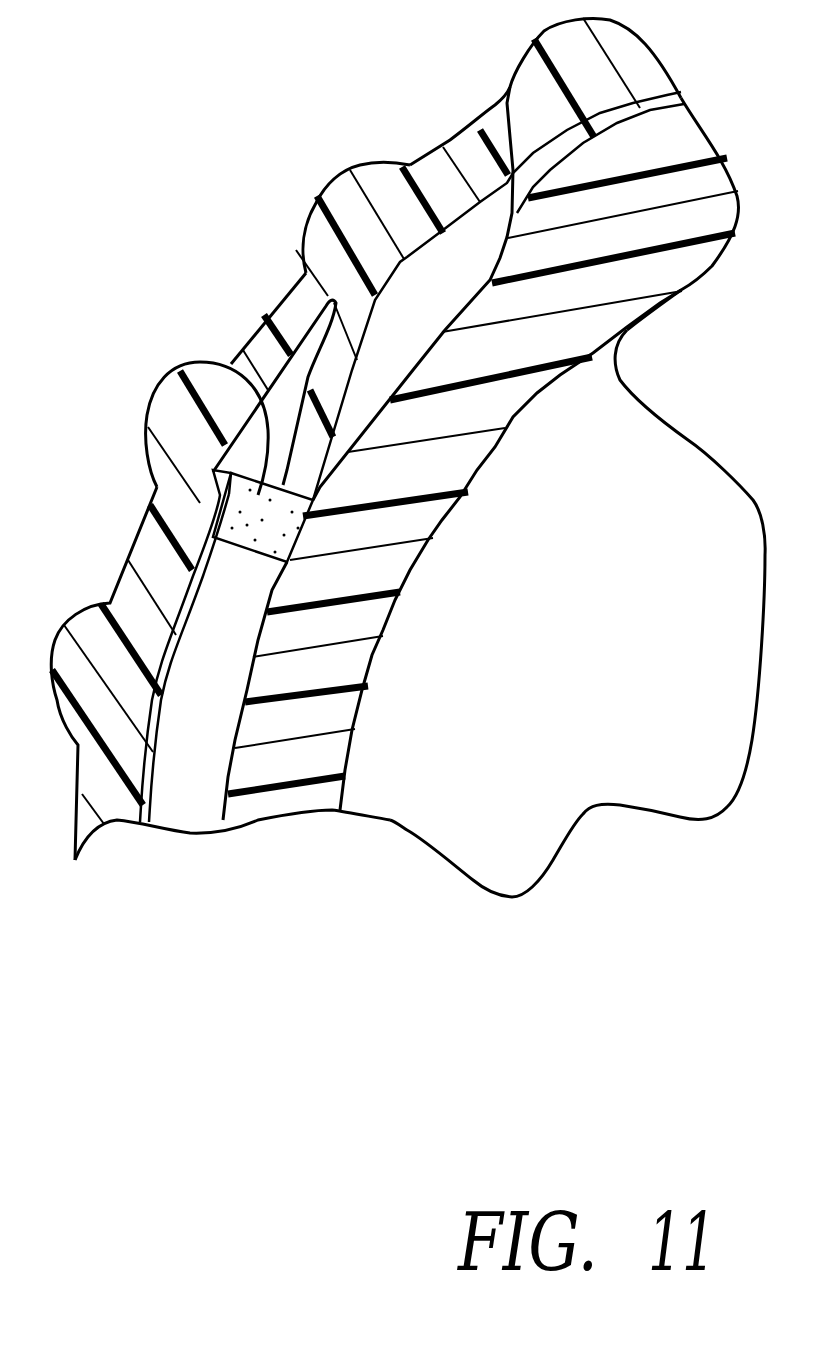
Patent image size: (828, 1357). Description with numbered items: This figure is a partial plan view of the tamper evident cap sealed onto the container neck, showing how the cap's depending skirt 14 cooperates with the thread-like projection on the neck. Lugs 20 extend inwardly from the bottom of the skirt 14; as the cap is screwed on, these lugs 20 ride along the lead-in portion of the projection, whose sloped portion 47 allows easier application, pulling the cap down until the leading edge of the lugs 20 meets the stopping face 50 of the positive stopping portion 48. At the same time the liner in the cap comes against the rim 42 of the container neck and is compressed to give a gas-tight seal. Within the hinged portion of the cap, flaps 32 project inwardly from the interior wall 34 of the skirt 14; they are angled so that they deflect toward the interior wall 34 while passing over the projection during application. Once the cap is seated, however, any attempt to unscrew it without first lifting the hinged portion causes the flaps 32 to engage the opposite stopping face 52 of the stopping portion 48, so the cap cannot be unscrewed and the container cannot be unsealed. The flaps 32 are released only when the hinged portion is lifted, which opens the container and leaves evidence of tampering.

The depending skirt 14 is at (343, 213).
The sloped portion 47 is at (513, 172).
The interior wall 34 is at (290, 345).
The stopping face 52 is at (222, 364).
The positive stopping portion 48 is at (172, 491).
The stopping face 50 is at (255, 535).
The flaps 32 is at (330, 405).
The rim 42 is at (370, 702).
The lugs 20 is at (183, 833).